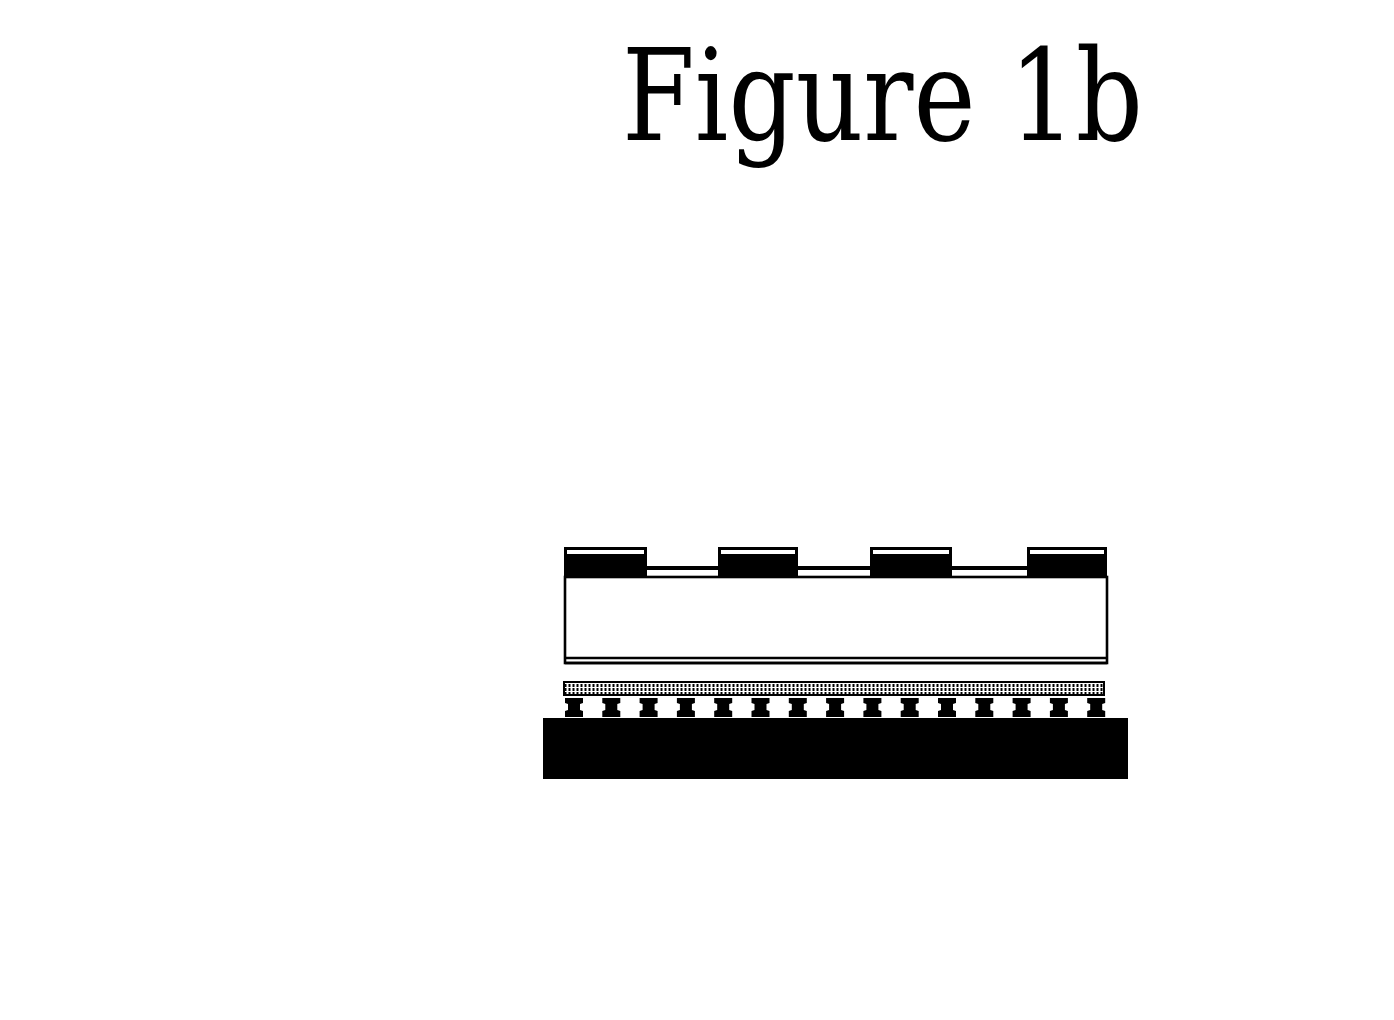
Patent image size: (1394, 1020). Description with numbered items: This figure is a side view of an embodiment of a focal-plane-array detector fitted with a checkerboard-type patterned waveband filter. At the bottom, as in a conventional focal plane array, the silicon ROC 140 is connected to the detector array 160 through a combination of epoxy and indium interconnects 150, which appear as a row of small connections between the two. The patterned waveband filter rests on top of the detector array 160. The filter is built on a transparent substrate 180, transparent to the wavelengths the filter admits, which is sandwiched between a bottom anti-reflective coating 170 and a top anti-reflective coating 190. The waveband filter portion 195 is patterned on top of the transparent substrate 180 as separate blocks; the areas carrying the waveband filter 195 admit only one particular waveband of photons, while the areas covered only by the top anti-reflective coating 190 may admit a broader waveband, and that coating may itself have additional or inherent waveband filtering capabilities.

The silicon ROC 140 is at (543, 768).
The epoxy and indium interconnects 150 is at (563, 708).
The detector array 160 is at (563, 678).
The bottom anti-reflective coating 170 is at (1110, 658).
The transparent substrate 180 is at (565, 600).
The top anti-reflective coating 190 is at (828, 567).
The waveband filter portion 195 is at (1110, 567).